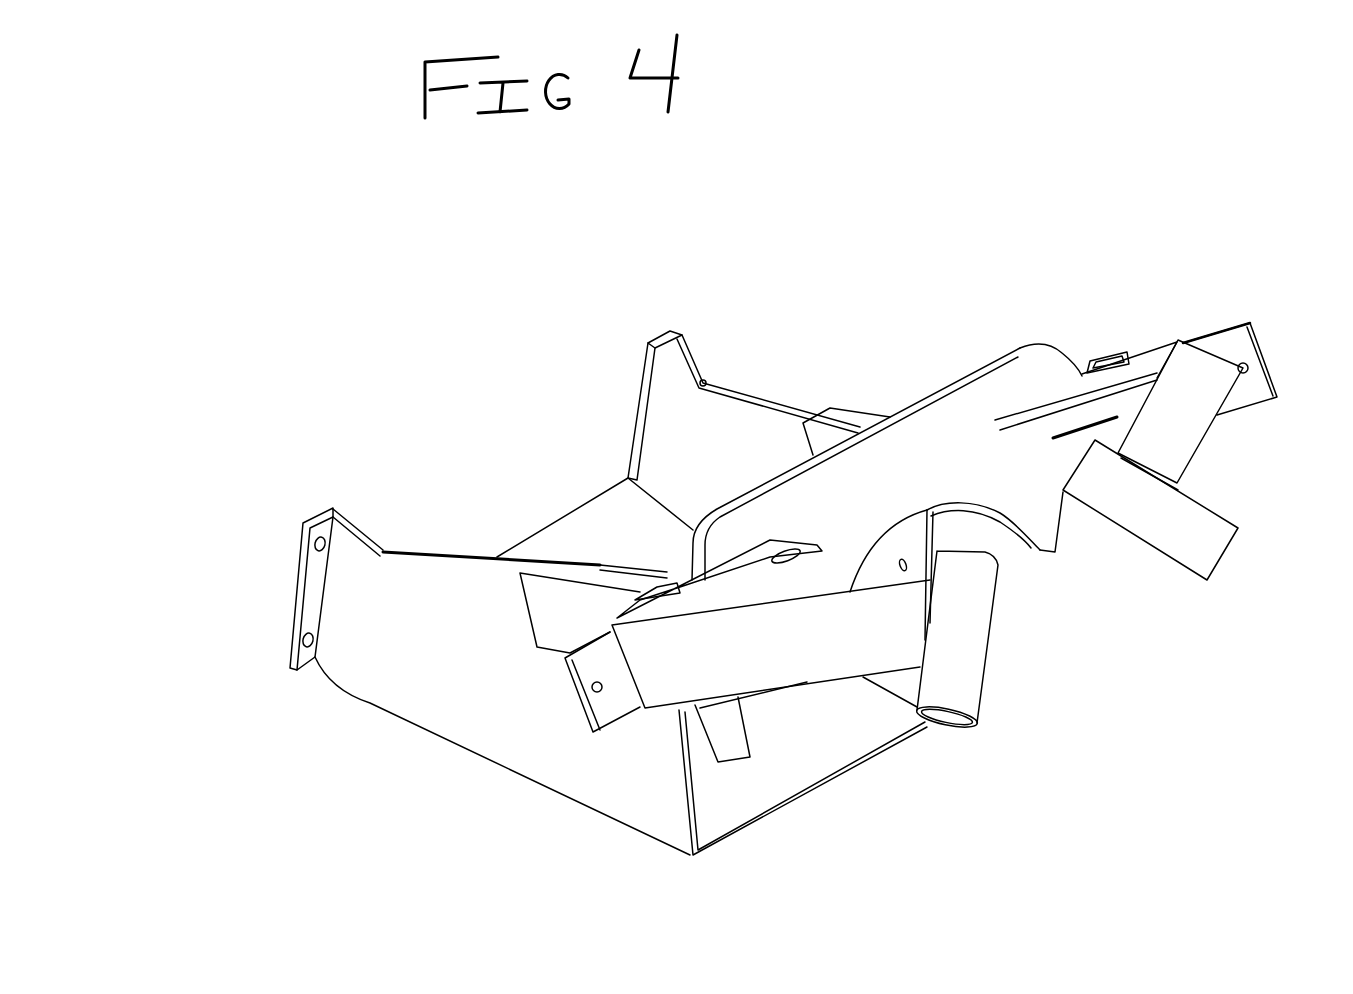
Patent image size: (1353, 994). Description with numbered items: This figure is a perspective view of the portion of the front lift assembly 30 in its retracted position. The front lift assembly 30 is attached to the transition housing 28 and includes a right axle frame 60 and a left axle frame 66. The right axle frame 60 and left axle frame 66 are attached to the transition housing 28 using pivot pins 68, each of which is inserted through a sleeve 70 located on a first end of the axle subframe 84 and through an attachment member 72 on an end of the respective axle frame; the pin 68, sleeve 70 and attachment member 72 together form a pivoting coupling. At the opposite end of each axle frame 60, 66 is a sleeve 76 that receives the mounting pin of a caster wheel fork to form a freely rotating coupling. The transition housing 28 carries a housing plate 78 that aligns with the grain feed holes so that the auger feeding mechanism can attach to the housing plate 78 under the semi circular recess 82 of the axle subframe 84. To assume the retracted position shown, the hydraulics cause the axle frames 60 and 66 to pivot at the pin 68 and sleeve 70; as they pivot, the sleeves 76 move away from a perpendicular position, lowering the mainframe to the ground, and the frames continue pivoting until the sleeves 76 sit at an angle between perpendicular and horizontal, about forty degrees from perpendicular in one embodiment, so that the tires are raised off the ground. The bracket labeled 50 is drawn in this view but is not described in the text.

The transition housing 28 is at (760, 817).
The front lift assembly 30 is at (393, 380).
The side mounting bracket 50 is at (316, 518).
The right axle frame 60 is at (1203, 443).
The left axle frame 66 is at (812, 687).
The pivot pin 68 is at (1120, 353).
The sleeve 70 is at (567, 863).
The attachment member 72 is at (1227, 323).
The sleeve 76 is at (1157, 560).
The housing plate 78 is at (573, 520).
The semi circular recess 82 is at (1030, 549).
The axle subframe 84 is at (925, 437).